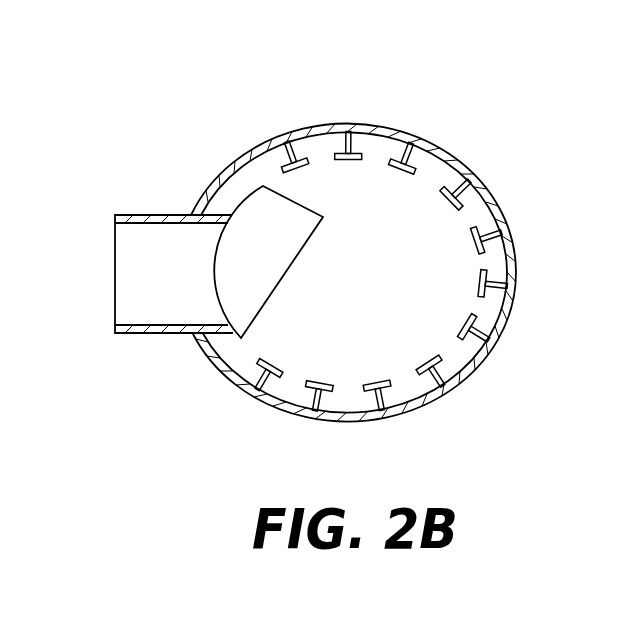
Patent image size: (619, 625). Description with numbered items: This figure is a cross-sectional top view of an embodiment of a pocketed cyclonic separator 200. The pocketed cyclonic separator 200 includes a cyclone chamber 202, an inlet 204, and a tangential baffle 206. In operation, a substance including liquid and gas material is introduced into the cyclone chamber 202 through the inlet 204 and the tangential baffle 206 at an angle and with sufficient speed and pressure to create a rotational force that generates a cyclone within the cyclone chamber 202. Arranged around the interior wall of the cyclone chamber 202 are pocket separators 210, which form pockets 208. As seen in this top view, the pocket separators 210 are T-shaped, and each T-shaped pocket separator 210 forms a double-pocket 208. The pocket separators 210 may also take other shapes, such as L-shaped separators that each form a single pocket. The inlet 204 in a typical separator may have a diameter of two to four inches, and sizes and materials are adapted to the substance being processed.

The pocketed cyclonic separator 200 is at (157, 168).
The cyclone chamber 202 is at (405, 203).
The inlet 204 is at (114, 253).
The tangential baffle 206 is at (293, 197).
The pockets 208 is at (288, 387).
The pocket separators 210 is at (487, 271).